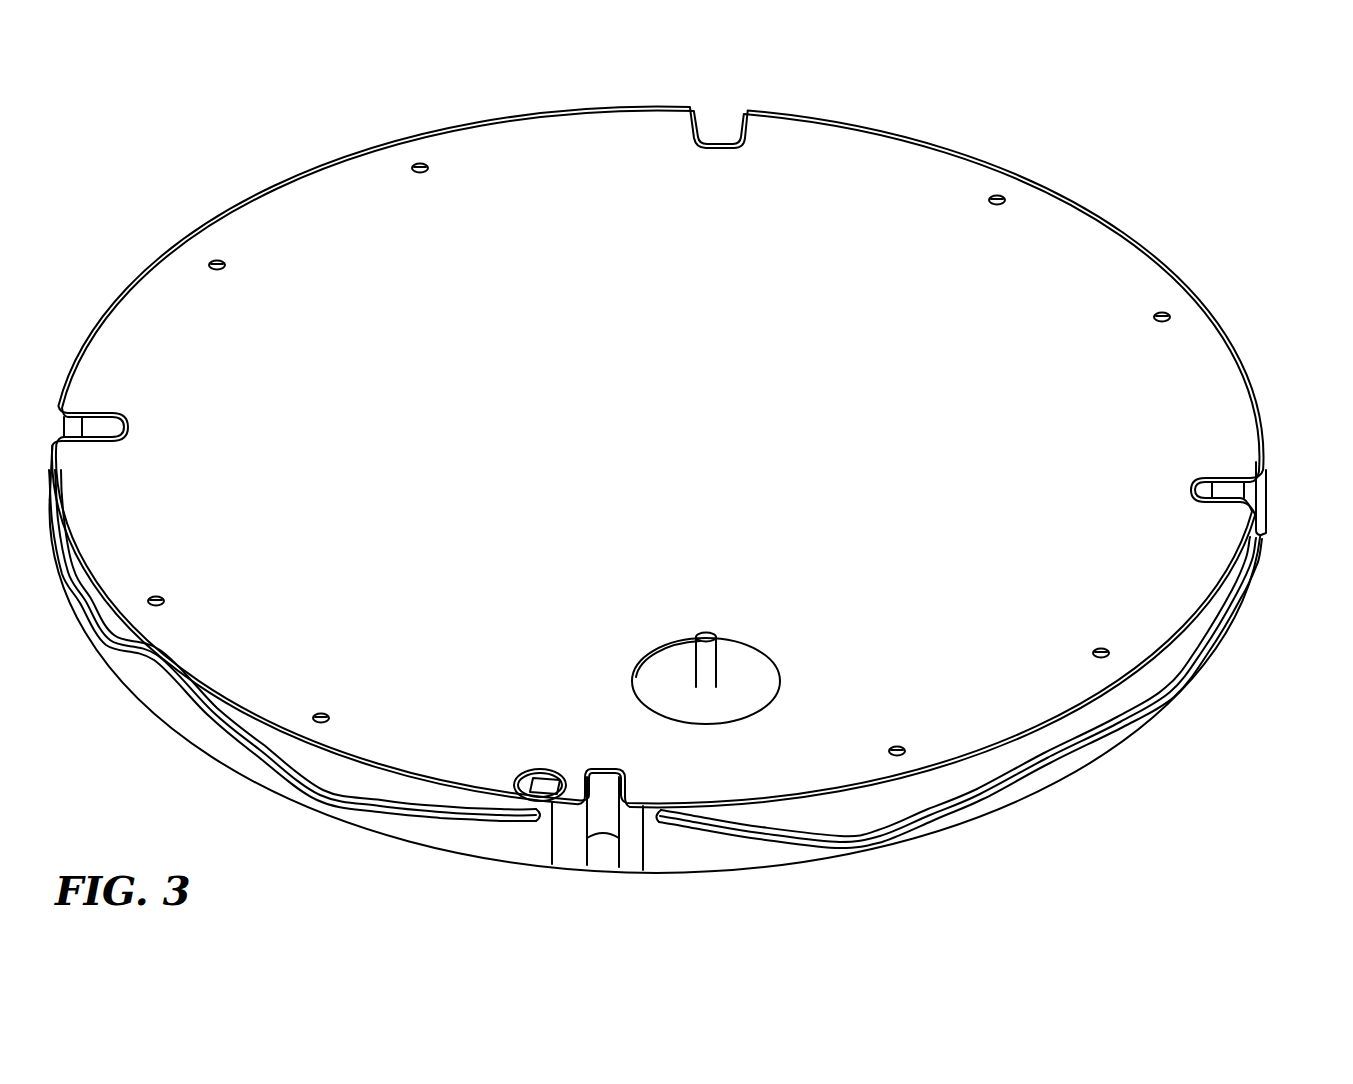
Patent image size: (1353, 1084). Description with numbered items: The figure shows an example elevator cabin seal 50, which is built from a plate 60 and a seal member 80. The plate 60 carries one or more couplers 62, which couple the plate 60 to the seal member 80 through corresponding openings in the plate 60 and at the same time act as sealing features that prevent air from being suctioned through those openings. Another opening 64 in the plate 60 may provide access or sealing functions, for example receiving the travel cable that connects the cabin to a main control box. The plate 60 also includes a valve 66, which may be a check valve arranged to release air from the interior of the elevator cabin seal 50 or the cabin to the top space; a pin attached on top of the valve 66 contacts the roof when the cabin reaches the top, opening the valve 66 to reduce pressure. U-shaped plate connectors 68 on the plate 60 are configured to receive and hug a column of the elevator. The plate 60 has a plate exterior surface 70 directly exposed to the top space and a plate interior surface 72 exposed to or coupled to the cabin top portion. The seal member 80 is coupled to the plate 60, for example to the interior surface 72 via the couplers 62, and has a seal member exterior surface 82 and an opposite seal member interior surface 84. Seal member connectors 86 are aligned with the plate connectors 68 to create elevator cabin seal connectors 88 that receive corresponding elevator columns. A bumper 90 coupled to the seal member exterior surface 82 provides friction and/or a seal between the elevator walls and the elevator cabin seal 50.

The elevator cabin seal 50 is at (1128, 220).
The plate 60 is at (980, 152).
The couplers 62 is at (418, 163).
The opening 64 is at (522, 768).
The valve 66 is at (677, 680).
The plate connectors 68 is at (594, 768).
The plate exterior surface 70 is at (856, 175).
The plate interior surface 72 is at (977, 840).
The seal member 80 is at (1150, 723).
The seal member exterior surface 82 is at (1270, 558).
The seal member interior surface 84 is at (1270, 508).
The seal member connectors 86 is at (597, 833).
The elevator cabin seal connectors 88 is at (592, 865).
The bumper 90 is at (1050, 743).